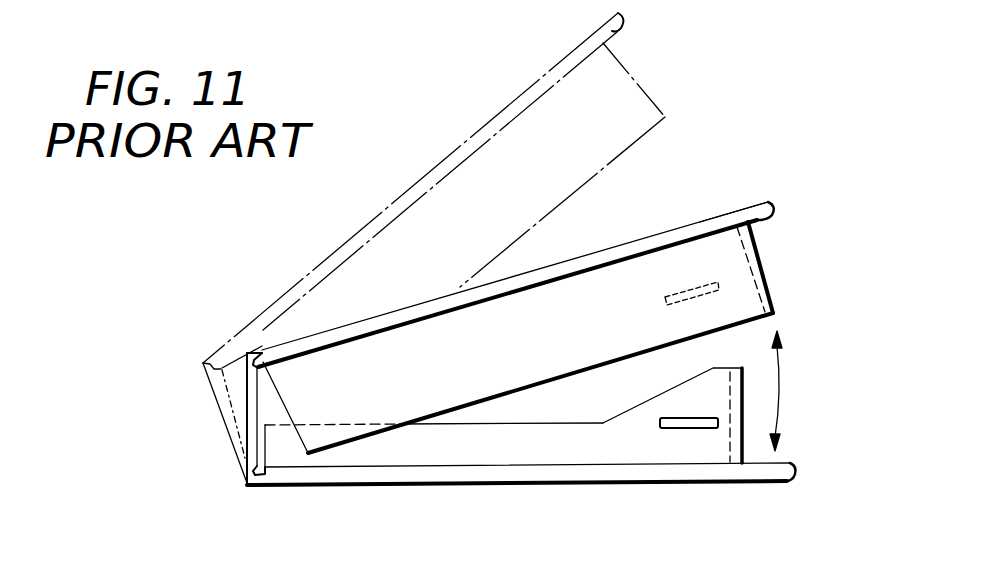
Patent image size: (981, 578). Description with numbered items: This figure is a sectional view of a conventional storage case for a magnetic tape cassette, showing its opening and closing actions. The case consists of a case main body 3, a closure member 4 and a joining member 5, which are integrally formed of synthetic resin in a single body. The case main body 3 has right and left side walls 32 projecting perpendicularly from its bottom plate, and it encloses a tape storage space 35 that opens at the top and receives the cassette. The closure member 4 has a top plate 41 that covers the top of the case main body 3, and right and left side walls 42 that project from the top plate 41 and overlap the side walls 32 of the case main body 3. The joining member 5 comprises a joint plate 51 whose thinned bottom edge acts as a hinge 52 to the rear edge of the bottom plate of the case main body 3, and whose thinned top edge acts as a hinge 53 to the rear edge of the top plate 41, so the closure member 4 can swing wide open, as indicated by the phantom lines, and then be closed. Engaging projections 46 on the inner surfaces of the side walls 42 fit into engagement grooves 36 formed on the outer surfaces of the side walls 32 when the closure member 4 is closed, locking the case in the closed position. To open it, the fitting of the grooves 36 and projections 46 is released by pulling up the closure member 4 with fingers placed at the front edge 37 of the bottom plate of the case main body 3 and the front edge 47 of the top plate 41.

The case main body 3 is at (507, 483).
The closure member 4 is at (418, 177).
The joining member 5 is at (244, 428).
The side wall 32 is at (458, 450).
The tape storage space 35 is at (600, 410).
The engagement groove 36 is at (693, 428).
The front edge 37 is at (797, 475).
The top plate 41 is at (767, 202).
The side wall 42 is at (748, 308).
The engaging projection 46 is at (718, 284).
The front edge 47 is at (619, 31).
The joint plate 51 is at (250, 397).
The hinge 52 is at (260, 478).
The hinge 53 is at (260, 358).